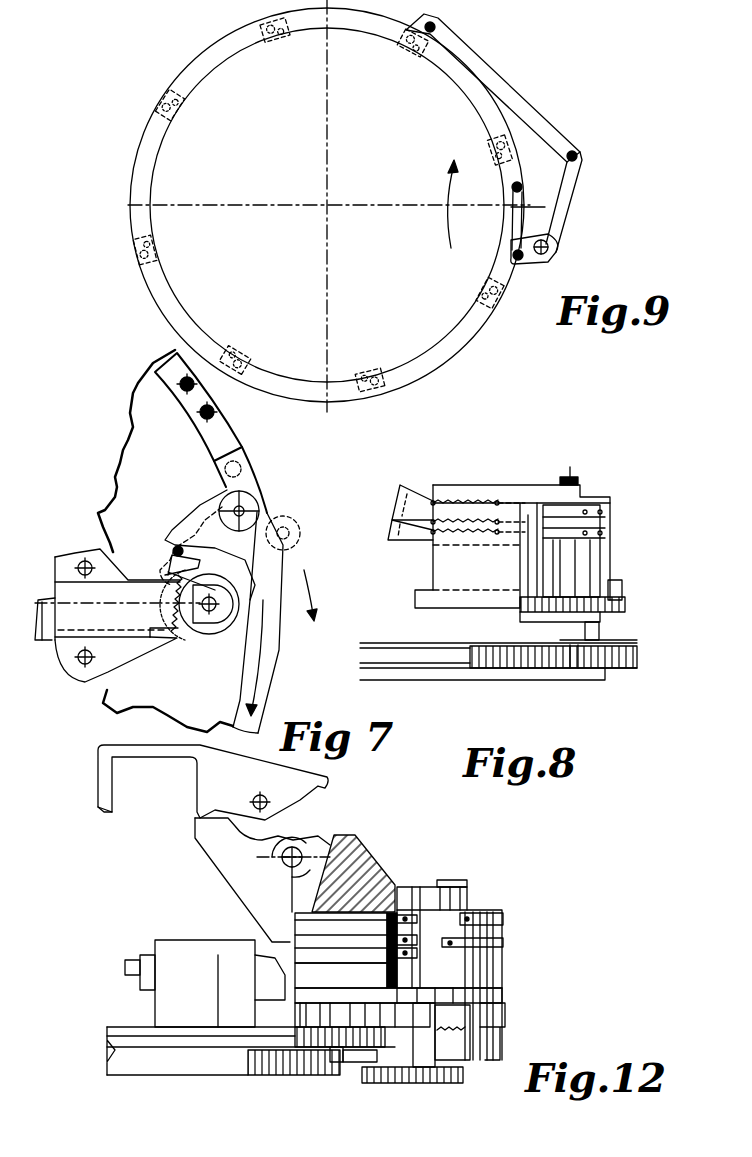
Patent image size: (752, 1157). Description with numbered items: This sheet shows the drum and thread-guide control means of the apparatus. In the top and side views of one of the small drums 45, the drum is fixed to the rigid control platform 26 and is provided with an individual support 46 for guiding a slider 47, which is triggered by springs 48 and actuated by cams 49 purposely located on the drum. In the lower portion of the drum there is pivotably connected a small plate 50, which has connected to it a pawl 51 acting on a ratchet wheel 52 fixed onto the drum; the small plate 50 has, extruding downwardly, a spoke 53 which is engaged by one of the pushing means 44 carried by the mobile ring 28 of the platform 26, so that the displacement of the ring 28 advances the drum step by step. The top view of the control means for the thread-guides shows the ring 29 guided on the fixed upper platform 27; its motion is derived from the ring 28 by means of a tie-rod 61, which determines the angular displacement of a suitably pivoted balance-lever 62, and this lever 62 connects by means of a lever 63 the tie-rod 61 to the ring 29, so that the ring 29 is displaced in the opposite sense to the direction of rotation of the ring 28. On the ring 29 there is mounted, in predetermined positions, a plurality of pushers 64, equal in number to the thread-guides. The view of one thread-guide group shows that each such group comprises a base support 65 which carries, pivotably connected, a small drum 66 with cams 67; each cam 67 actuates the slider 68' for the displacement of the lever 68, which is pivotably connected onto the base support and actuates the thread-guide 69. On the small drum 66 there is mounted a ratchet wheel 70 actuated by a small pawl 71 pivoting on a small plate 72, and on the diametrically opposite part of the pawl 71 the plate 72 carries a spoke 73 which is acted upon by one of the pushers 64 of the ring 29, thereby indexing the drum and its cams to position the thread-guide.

In FIG. 7, the rigid control platform 26 is at (145, 465).
In FIG. 8, the rigid control platform 26 is at (463, 673).
In FIG. 9, the fixed upper platform 27 is at (160, 180).
In FIG. 12, the fixed upper platform 27 is at (165, 1060).
In FIG. 7, the mobile ring 28 is at (270, 672).
In FIG. 8, the mobile ring 28 is at (637, 657).
In FIG. 9, the ring 29 is at (140, 215).
In FIG. 12, the ring 29 is at (322, 1038).
In FIG. 7, the pushing means 44 is at (228, 440).
In FIG. 8, the pushing means 44 is at (610, 632).
In FIG. 7, the small drum 45 is at (213, 637).
In FIG. 8, the small drum 45 is at (600, 555).
In FIG. 7, the support 46 is at (127, 618).
In FIG. 8, the support 46 is at (497, 500).
In FIG. 7, the slider 47 is at (52, 612).
In FIG. 8, the slider 47 is at (420, 540).
In FIG. 8, the spring 48 is at (460, 501).
In FIG. 7, the cam 49 is at (227, 641).
In FIG. 8, the cam 49 is at (592, 526).
In FIG. 7, the small plate 50 is at (195, 522).
In FIG. 8, the small plate 50 is at (622, 614).
In FIG. 7, the pawl 51 is at (185, 533).
In FIG. 8, the ratchet wheel 52 is at (620, 593).
In FIG. 8, the spoke 53 is at (598, 652).
In FIG. 9, the tie-rod 61 is at (482, 72).
In FIG. 9, the balance-lever 62 is at (562, 196).
In FIG. 9, the lever 63 is at (522, 221).
In FIG. 9, the pusher 64 is at (166, 96).
In FIG. 9, the base support 65 is at (258, 30).
In FIG. 12, the base support 65 is at (300, 1015).
In FIG. 12, the small drum 66 is at (488, 975).
In FIG. 12, the cam 67 is at (400, 915).
In FIG. 12, the lever 68 is at (249, 880).
In FIG. 12, the slider 68' is at (353, 859).
In FIG. 12, the thread-guide 69 is at (110, 768).
In FIG. 12, the ratchet wheel 70 is at (455, 993).
In FIG. 12, the small pawl 71 is at (505, 1005).
In FIG. 12, the small plate 72 is at (420, 1078).
In FIG. 12, the spoke 73 is at (360, 1058).